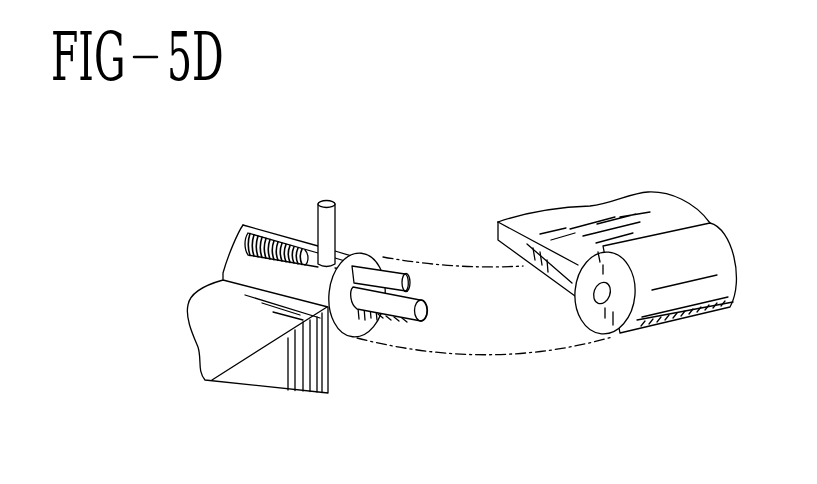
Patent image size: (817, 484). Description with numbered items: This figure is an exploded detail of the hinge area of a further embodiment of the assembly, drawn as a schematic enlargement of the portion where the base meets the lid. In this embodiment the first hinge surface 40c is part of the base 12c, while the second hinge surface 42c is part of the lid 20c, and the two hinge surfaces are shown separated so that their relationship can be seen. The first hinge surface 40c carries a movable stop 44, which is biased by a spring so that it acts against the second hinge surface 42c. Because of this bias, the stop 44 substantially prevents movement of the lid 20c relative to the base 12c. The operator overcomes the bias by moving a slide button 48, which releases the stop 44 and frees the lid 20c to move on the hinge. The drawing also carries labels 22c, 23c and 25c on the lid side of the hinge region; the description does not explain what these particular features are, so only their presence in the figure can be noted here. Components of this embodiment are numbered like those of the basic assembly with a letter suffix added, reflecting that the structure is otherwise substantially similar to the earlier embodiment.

The base 12c is at (207, 345).
The slide button 48 is at (328, 201).
The movable stop 44 is at (384, 257).
The shaft end / swing path 23c is at (412, 272).
The first hinge surface 40c is at (357, 337).
The guide assembly 22c is at (532, 178).
The lid 20c is at (623, 205).
The cylinder 25c is at (678, 282).
The second hinge surface 42c is at (608, 318).